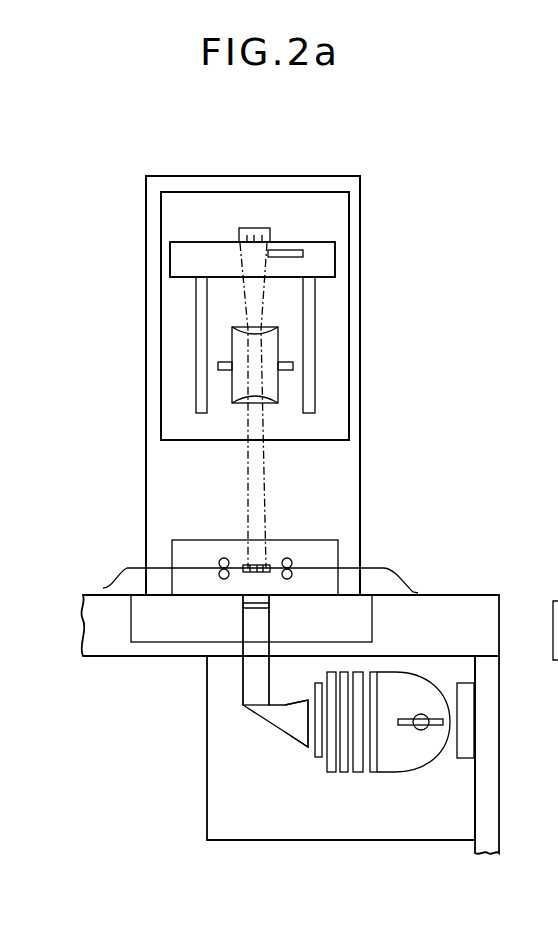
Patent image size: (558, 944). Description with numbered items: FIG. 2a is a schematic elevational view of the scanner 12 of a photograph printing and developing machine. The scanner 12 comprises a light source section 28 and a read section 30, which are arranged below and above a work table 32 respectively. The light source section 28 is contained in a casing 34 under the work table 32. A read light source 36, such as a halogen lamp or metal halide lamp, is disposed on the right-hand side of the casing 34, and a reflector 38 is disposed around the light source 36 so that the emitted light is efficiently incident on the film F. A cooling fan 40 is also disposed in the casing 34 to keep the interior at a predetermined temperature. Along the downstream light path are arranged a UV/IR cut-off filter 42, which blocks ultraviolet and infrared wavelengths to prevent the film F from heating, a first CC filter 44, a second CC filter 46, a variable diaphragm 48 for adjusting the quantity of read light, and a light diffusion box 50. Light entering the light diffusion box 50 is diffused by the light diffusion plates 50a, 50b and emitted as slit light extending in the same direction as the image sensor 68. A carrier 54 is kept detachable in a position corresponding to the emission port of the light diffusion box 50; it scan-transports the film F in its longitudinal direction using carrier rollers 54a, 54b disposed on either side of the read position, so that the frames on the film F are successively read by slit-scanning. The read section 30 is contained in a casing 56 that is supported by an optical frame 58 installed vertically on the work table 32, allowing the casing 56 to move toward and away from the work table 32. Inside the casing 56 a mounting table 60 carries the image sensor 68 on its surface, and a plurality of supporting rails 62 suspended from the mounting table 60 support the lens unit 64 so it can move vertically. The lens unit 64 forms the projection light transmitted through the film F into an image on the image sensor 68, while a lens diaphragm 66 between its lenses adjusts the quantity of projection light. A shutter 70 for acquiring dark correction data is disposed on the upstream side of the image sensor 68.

The scanner 12 is at (400, 161).
The light source section 28 is at (230, 791).
The read section 30 is at (171, 412).
The work table 32 is at (472, 595).
The casing 34 is at (218, 842).
The read light source 36 is at (424, 731).
The reflector 38 is at (400, 775).
The cooling fan 40 is at (462, 758).
The UV/IR cut-off filter 42 is at (357, 773).
The first CC filter 44 is at (344, 773).
The second CC filter 46 is at (331, 773).
The variable diaphragm 48 is at (318, 758).
The light diffusion box 50 is at (260, 726).
The light diffusion plate 50a is at (306, 749).
The light diffusion plate 50b is at (243, 603).
The carrier 54 is at (345, 542).
The carrier roller 54a is at (220, 558).
The carrier roller 54b is at (289, 579).
The casing 56 is at (349, 341).
The optical frame 58 is at (360, 400).
The mounting table 60 is at (170, 258).
The supporting rails 62 is at (196, 297).
The lens unit 64 is at (278, 398).
The lens diaphragm 66 is at (218, 366).
The image sensor 68 is at (262, 228).
The shutter 70 is at (303, 254).
The film F is at (115, 571).